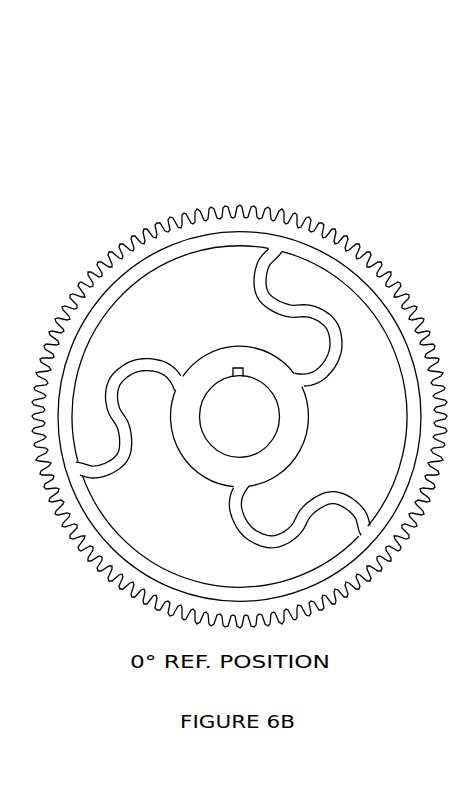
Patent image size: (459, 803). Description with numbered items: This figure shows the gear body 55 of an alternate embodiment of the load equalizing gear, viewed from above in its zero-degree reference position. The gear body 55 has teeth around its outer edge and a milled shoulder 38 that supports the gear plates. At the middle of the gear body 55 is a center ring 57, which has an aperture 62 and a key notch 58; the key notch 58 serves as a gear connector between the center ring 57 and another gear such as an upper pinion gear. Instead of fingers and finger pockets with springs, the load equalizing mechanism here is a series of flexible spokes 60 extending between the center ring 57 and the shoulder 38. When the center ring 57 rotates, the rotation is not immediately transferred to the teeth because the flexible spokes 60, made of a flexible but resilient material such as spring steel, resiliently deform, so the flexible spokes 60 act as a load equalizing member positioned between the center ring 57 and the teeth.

The gear body 55 is at (232, 168).
The milled shoulder 38 is at (187, 247).
The center ring 57 is at (304, 433).
The key notch 58 is at (238, 368).
The flexible spokes 60 is at (135, 357).
The aperture 62 is at (255, 425).